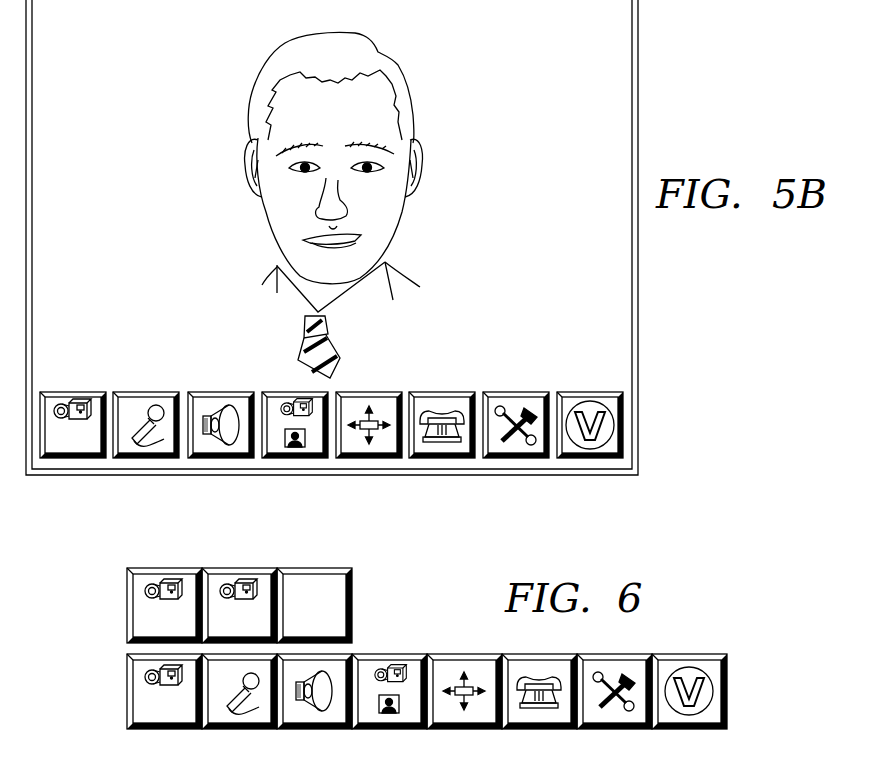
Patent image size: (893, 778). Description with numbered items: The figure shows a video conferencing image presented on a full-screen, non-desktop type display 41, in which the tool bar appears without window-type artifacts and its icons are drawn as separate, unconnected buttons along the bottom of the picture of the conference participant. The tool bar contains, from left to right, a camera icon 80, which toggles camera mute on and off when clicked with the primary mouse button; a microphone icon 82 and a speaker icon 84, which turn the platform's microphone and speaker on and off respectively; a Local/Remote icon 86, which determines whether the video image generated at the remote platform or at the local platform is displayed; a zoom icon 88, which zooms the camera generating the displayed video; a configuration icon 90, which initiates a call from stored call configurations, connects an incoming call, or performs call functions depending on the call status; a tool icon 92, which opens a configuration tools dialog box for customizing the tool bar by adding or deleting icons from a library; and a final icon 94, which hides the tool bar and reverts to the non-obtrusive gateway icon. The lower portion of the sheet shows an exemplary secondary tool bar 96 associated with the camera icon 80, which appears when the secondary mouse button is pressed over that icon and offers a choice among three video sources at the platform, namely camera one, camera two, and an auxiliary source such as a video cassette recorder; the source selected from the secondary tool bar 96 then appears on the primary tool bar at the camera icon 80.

In FIG. 5B, the display 41 is at (640, 277).
In FIG. 5B, the camera icon 80 is at (64, 398).
In FIG. 6, the camera icon 80 is at (138, 703).
In FIG. 5B, the microphone icon 82 is at (147, 398).
In FIG. 5B, the speaker icon 84 is at (212, 398).
In FIG. 5B, the Local/Remote icon 86 is at (290, 398).
In FIG. 5B, the zoom icon 88 is at (375, 398).
In FIG. 5B, the configuration icon 90 is at (443, 398).
In FIG. 5B, the tool icon 92 is at (513, 398).
In FIG. 5B, the icon 94 is at (612, 405).
In FIG. 6, the secondary tool bar 96 is at (110, 570).